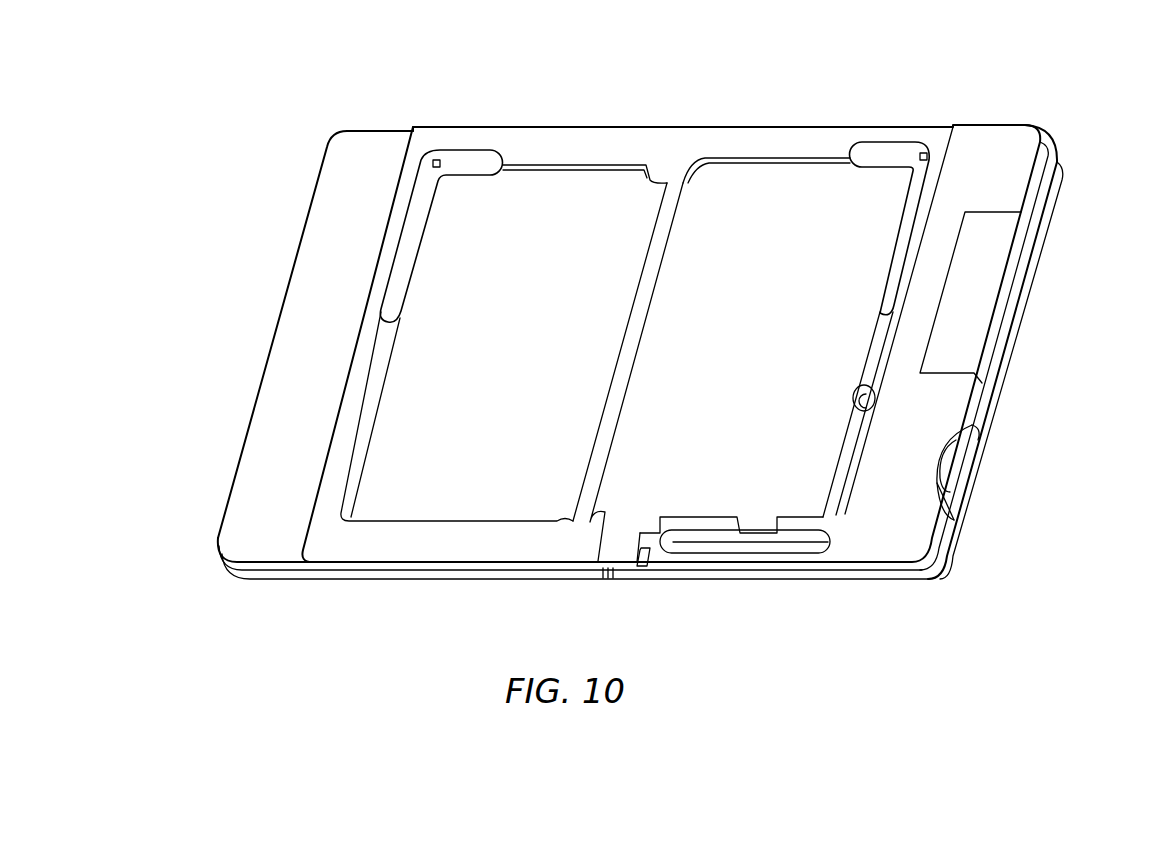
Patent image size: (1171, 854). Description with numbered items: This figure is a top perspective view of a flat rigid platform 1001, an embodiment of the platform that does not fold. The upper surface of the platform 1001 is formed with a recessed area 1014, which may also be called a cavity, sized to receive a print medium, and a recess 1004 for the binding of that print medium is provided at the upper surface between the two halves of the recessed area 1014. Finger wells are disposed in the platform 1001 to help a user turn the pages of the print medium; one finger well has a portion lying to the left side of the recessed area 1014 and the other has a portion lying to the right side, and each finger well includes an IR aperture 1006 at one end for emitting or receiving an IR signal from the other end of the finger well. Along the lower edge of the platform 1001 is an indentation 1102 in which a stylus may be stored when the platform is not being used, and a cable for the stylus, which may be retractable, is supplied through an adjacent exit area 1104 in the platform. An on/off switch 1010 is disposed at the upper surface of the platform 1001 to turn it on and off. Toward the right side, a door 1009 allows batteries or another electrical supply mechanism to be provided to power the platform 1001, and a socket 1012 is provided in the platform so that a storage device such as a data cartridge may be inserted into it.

The flat rigid platform 1001 is at (493, 97).
The recess 1004 is at (665, 217).
The IR aperture 1006 is at (925, 153).
The door 1009 is at (985, 287).
The on/off switch 1010 is at (875, 397).
The socket 1012 is at (950, 463).
The recessed area 1014 is at (545, 321).
The indentation 1102 is at (767, 545).
The exit area 1104 is at (643, 568).